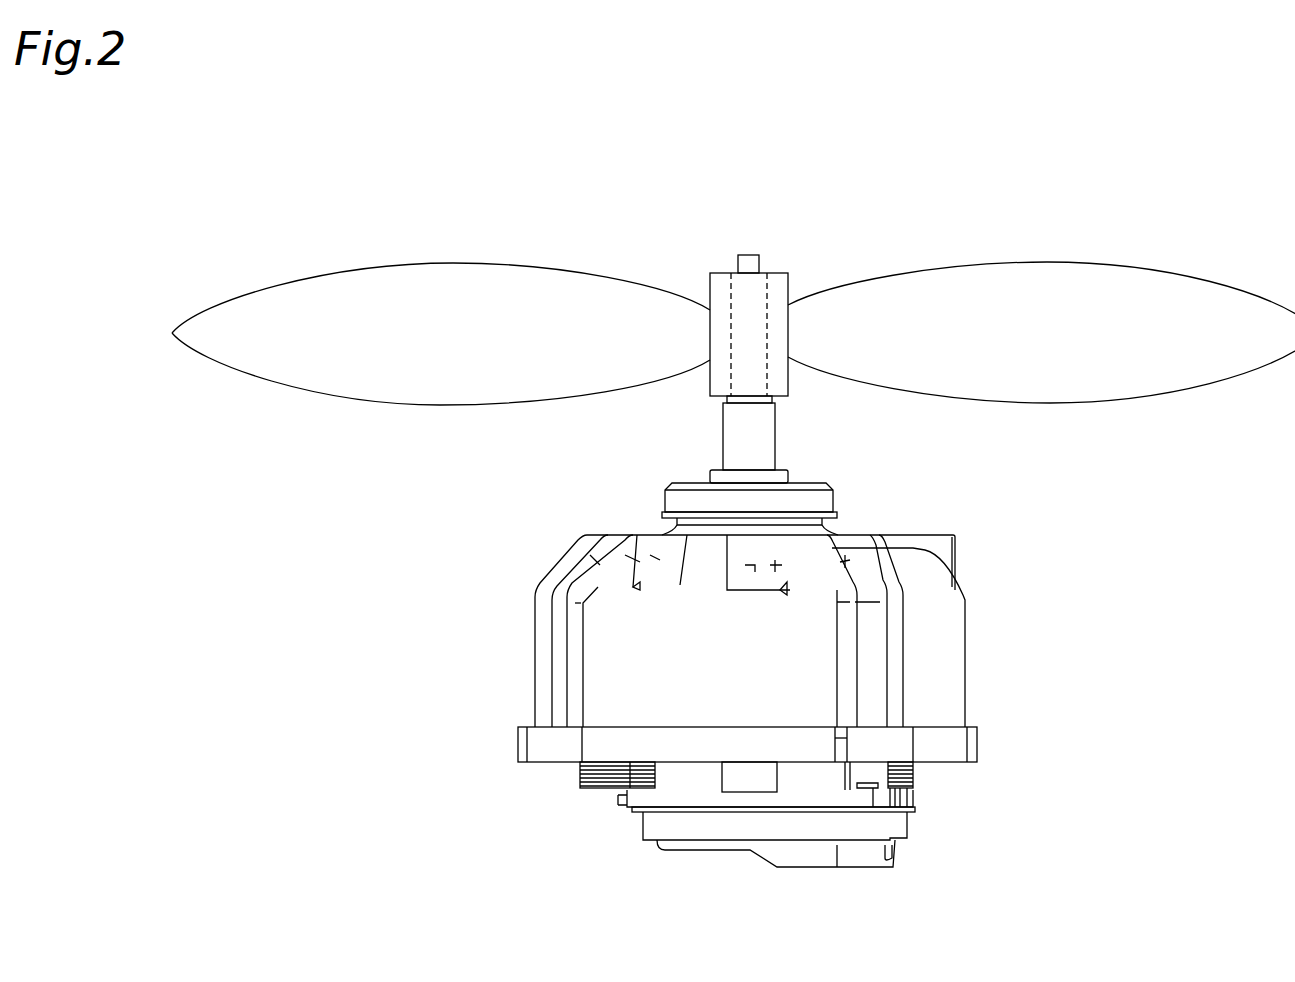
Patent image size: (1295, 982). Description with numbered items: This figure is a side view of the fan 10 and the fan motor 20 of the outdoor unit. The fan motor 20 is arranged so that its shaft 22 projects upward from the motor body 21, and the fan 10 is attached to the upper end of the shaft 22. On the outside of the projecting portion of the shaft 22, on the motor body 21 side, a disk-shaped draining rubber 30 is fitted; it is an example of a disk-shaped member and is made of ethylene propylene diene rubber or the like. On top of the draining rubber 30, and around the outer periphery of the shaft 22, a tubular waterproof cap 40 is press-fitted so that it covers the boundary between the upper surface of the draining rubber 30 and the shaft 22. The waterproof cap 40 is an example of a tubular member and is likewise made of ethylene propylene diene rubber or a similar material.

The fan 10 is at (1125, 282).
The fan motor 20 is at (843, 693).
The motor body 21 is at (945, 675).
The shaft 22 is at (748, 263).
The draining rubber 30 is at (820, 502).
The waterproof cap 40 is at (740, 443).